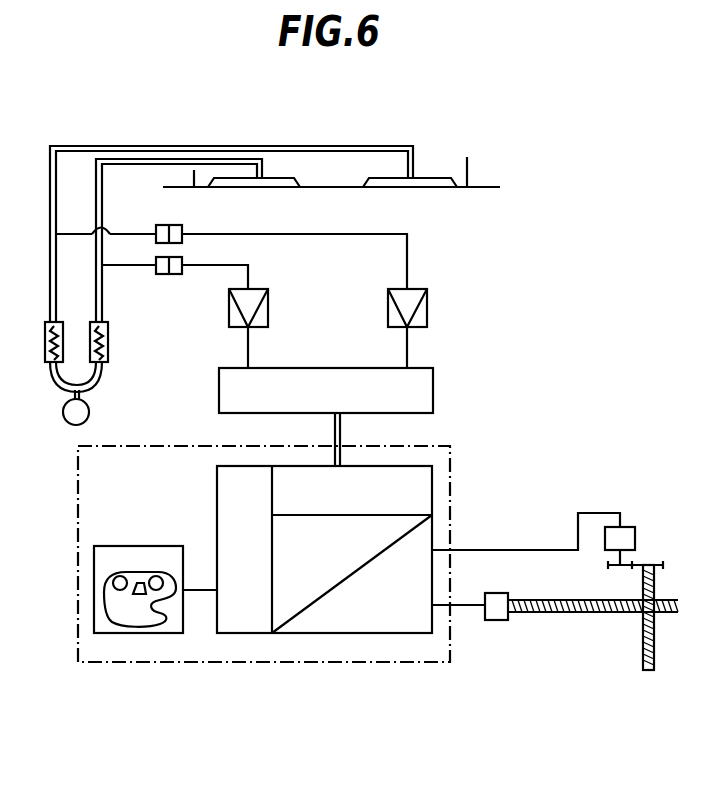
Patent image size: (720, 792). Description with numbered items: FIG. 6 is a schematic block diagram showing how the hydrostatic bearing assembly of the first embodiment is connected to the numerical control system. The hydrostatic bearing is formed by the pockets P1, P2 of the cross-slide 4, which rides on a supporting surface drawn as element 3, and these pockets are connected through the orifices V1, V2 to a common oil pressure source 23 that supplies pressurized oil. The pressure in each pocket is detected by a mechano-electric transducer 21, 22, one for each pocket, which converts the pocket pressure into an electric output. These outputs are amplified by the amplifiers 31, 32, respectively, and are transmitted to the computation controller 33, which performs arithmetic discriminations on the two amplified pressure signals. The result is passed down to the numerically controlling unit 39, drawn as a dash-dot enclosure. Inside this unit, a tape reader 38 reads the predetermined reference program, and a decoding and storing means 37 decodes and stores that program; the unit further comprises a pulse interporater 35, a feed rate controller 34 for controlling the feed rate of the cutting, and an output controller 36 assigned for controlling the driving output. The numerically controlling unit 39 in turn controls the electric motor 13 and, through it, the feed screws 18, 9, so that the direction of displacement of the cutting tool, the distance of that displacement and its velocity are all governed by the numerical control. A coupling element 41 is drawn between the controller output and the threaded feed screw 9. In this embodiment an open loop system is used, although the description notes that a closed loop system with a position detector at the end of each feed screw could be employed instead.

The platform 3 is at (459, 190).
The cross-slide 4 is at (443, 158).
The feed screw 9 is at (567, 615).
The electric motor 13 is at (623, 534).
The feed screw 18 is at (643, 645).
The mechano-electric transducer 21 is at (165, 276).
The mechano-electric transducer 22 is at (157, 229).
The oil pressure source 23 is at (90, 412).
The amplifier 31 is at (268, 303).
The amplifier 32 is at (427, 303).
The computation controller 33 is at (415, 393).
The feed rate controller 34 is at (417, 488).
The pulse interporater 35 is at (290, 560).
The output controller 36 is at (342, 620).
The decoding and storing means 37 is at (230, 497).
The tape reader 38 is at (94, 565).
The numerically controlling unit 39 is at (197, 648).
The drive coupling 41 is at (493, 622).
The pocket P1 is at (277, 180).
The pocket P2 is at (409, 186).
The orifice V1 is at (109, 350).
The orifice V2 is at (47, 356).